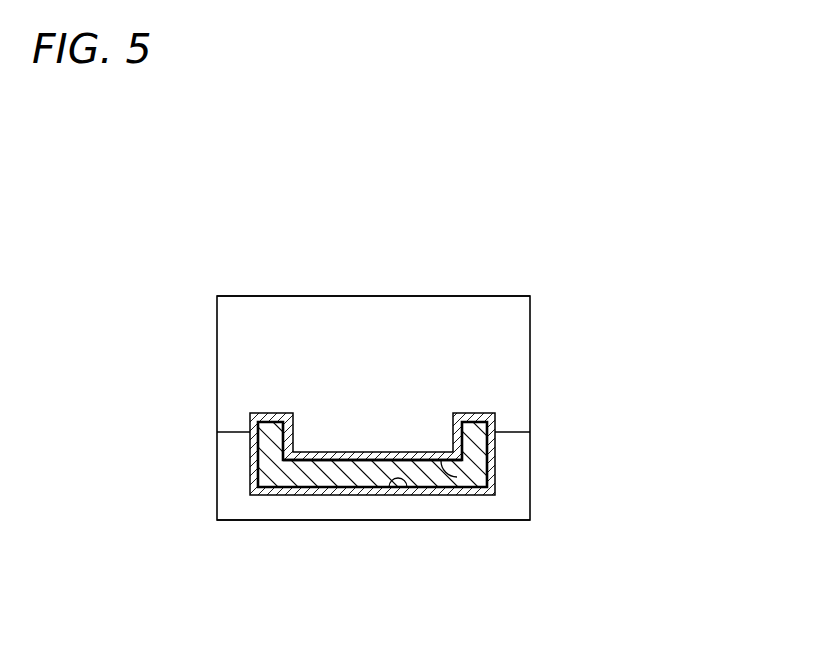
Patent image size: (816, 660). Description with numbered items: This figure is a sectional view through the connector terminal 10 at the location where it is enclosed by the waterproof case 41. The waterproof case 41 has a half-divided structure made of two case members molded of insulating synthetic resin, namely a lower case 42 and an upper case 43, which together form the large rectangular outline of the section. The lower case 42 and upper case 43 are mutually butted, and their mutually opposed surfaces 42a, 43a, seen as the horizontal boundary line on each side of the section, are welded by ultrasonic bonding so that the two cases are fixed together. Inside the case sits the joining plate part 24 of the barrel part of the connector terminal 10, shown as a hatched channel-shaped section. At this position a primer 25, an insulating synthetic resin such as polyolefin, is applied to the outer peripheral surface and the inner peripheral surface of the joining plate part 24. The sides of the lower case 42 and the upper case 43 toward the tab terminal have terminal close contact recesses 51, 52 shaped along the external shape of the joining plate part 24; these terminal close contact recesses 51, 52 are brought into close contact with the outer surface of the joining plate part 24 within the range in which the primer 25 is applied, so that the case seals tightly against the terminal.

The connector terminal 10 is at (398, 406).
The waterproof case 41 is at (540, 320).
The upper case 43 is at (472, 312).
The lower case 42 is at (529, 503).
The opposed surface 43a is at (234, 434).
The opposed surface 42a is at (510, 432).
The joining plate part 24 is at (272, 477).
The primer 25 is at (353, 452).
The terminal close contact recess 52 is at (460, 472).
The terminal close contact recess 51 is at (390, 481).